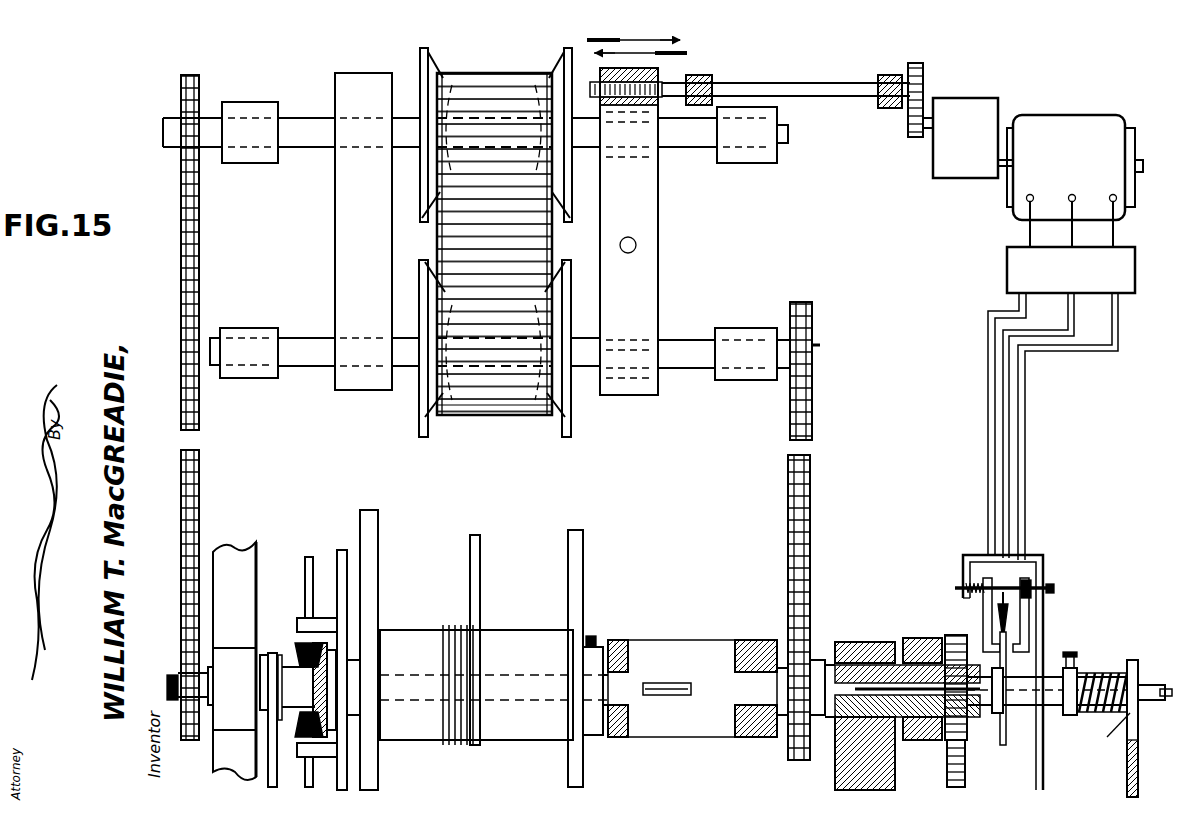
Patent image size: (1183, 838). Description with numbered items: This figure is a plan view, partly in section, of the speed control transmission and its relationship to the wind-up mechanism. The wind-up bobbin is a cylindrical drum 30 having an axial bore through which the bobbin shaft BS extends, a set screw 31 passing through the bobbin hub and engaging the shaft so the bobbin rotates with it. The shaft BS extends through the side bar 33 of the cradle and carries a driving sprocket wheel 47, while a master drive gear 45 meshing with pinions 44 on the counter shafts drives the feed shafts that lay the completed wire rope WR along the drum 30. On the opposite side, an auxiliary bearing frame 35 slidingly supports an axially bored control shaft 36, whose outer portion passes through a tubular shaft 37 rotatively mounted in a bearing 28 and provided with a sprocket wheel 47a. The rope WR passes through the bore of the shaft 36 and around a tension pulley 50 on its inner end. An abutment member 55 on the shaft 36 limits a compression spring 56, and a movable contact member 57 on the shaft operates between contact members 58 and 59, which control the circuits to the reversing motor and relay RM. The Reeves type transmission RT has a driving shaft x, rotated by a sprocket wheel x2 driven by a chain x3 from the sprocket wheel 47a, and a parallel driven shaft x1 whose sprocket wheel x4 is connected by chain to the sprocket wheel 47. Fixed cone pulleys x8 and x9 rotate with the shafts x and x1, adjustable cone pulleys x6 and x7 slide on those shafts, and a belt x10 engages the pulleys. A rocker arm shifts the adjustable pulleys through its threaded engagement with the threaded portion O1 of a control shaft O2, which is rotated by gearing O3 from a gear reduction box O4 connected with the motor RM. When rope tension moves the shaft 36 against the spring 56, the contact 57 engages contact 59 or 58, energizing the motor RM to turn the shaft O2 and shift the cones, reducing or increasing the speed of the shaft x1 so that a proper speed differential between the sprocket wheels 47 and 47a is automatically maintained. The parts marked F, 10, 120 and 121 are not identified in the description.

The sprocket wheel x4 is at (201, 97).
The chain x3 is at (205, 235).
The sprocket wheel x2 is at (815, 352).
The driven shaft x1 is at (690, 147).
The driving shaft x is at (673, 353).
The Reeves type transmission RT is at (404, 237).
The fixed cone pulley x9 is at (432, 38).
The adjustable cone pulley x7 is at (566, 52).
The fixed cone pulley x8 is at (422, 425).
The adjustable cone pulley x6 is at (575, 420).
The film reel F is at (497, 70).
The belt x10 is at (522, 418).
The carriage plate 10 is at (652, 280).
The threaded portion O1 is at (684, 84).
The control shaft O2 is at (806, 93).
The gearing O3 is at (926, 86).
The gear reduction box O4 is at (978, 112).
The reversing motor and relay RM is at (1068, 126).
The relay wires 120 is at (1052, 592).
The contact bracket 121 is at (1030, 580).
The contact member 58 is at (984, 655).
The contact member 59 is at (1030, 652).
The movable contact member 57 is at (1000, 728).
The abutment member 55 is at (1075, 665).
The compression spring 56 is at (1108, 668).
The wire rope WR is at (1156, 702).
The control shaft 36 is at (713, 622).
The bearing 28 is at (845, 643).
The tubular shaft 37 is at (878, 660).
The sprocket wheel 47a is at (805, 660).
The auxiliary bearing frame 35 is at (768, 742).
The tension pulley 50 is at (647, 700).
The side bar 33 is at (567, 760).
The set screw 31 is at (591, 633).
The cylindrical drum 30 is at (498, 643).
The bobbin shaft BS is at (170, 680).
The driving sprocket wheel 47 is at (178, 630).
The pinion 44 is at (298, 646).
The master drive gear 45 is at (322, 655).